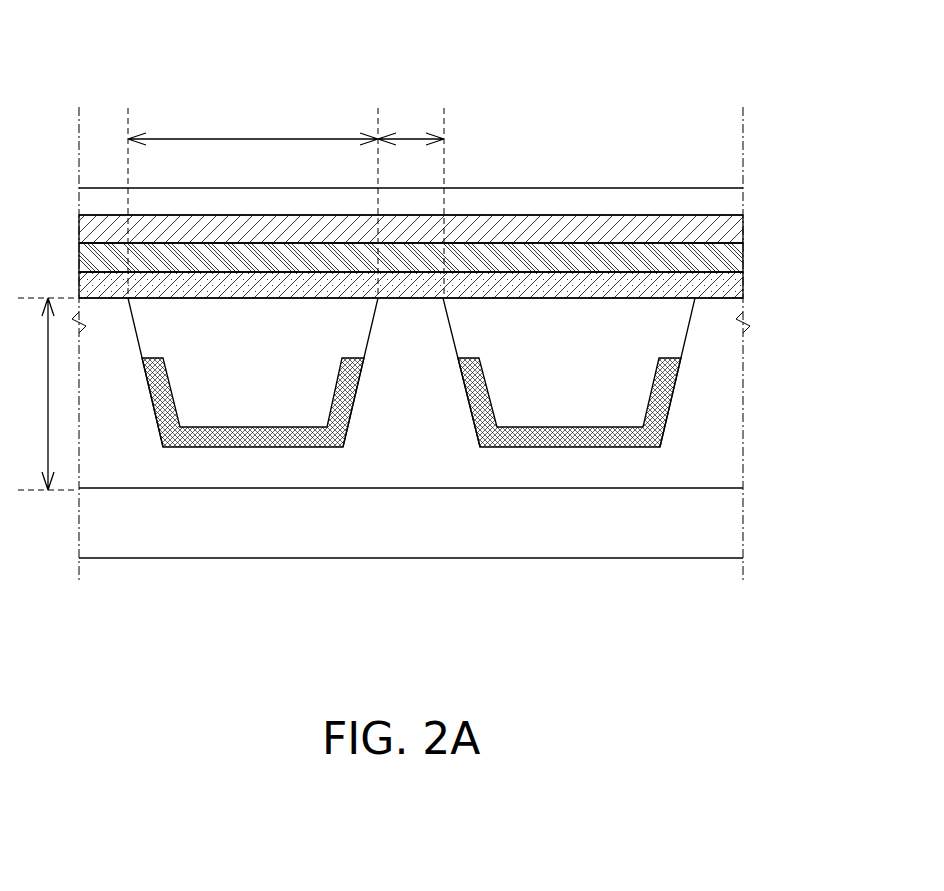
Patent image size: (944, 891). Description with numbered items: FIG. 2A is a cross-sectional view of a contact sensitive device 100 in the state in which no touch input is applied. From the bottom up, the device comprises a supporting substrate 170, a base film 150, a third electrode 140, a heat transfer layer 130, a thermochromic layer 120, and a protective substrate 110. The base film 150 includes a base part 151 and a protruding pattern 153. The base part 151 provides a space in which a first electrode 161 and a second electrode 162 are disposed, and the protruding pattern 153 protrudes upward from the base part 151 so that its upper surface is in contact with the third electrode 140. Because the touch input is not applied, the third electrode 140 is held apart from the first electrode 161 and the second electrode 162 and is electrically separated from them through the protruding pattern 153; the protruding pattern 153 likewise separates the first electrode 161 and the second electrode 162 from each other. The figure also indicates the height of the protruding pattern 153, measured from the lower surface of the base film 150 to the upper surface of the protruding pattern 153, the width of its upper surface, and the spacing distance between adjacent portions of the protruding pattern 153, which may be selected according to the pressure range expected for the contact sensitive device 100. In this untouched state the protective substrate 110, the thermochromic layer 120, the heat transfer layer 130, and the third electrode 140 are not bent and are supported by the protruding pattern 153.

The contact sensitive device 100 is at (703, 57).
The protective substrate 110 is at (717, 205).
The thermochromic layer 120 is at (717, 234).
The heat transfer layer 130 is at (717, 259).
The third electrode 140 is at (717, 289).
The base film 150 is at (476, 393).
The base part 151 is at (598, 470).
The protruding pattern 153 is at (412, 337).
The first electrode 161 is at (520, 437).
The second electrode 162 is at (318, 438).
The supporting substrate 170 is at (717, 524).